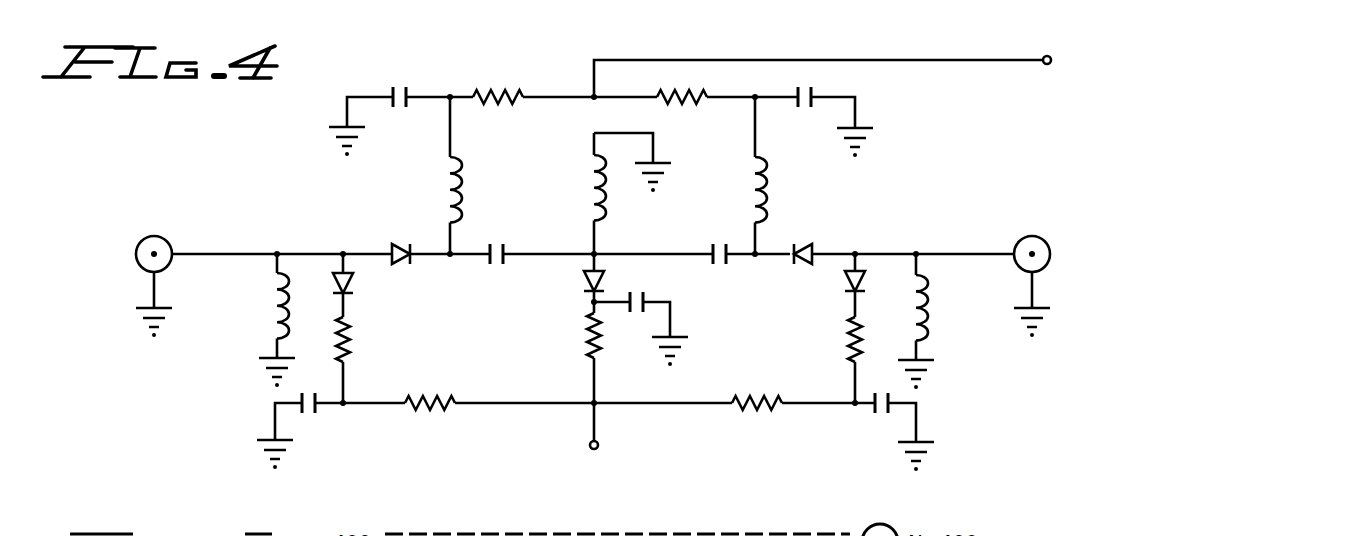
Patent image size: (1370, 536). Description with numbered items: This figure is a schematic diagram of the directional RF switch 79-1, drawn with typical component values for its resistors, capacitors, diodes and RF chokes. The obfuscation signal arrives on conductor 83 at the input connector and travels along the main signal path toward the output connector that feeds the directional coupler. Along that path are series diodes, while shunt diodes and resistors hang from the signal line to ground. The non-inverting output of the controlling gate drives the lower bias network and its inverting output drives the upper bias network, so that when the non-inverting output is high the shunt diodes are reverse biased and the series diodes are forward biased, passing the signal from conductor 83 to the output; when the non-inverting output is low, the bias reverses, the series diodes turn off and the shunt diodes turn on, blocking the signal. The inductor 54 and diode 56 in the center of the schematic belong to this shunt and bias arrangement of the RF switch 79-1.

The RF switch 79-1 is at (196, 400).
The conductor 83 is at (229, 254).
The inductor 54 is at (608, 200).
The diode 56 is at (594, 254).